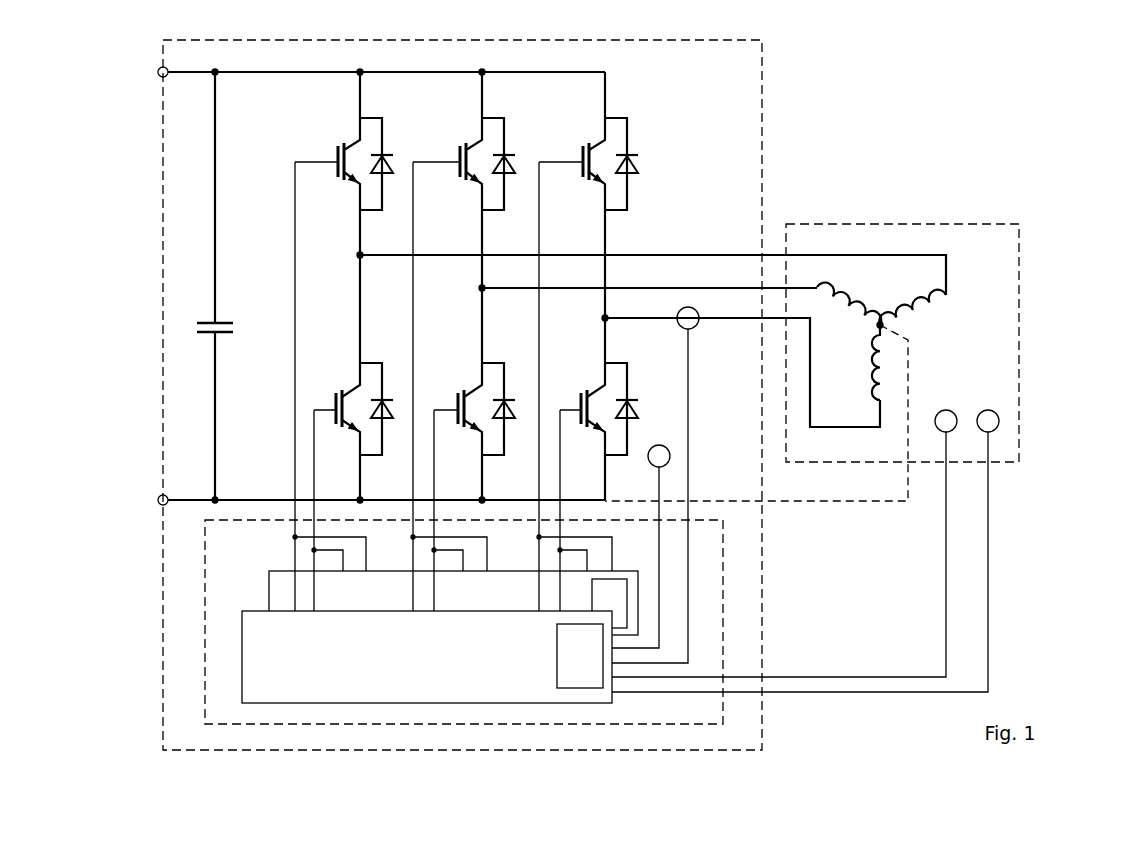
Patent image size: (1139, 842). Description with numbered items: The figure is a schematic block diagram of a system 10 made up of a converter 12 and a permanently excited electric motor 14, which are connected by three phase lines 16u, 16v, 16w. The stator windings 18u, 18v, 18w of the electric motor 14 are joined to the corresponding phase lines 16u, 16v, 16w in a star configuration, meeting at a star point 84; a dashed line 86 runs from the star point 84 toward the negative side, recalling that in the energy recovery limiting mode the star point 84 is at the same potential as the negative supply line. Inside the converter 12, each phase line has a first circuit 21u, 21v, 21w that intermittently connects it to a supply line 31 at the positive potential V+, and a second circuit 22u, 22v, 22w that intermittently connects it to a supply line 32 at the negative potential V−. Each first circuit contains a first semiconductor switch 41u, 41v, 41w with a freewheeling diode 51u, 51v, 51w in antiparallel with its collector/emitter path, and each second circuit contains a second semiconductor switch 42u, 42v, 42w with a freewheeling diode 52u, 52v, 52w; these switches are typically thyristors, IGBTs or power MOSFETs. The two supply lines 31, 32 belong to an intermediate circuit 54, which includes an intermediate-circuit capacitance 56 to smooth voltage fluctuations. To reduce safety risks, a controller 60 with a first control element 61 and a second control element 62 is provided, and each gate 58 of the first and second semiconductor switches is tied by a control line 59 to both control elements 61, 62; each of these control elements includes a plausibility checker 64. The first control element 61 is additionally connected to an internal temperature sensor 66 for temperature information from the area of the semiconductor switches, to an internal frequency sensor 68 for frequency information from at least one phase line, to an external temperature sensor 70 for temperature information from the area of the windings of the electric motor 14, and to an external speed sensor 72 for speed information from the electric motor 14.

The system 10 is at (937, 146).
The converter 12 is at (762, 93).
The electric motor 14 is at (1019, 322).
The phase line 16u is at (381, 258).
The phase line 16v is at (506, 292).
The phase line 16w is at (747, 324).
The winding 18u is at (911, 301).
The winding 18v is at (851, 295).
The winding 18w is at (863, 362).
The first circuit 21u is at (340, 137).
The first circuit 21v is at (462, 128).
The first circuit 21w is at (584, 128).
The second circuit 22u is at (343, 320).
The second circuit 22v is at (465, 320).
The second circuit 22w is at (598, 348).
The supply line 31 is at (186, 80).
The supply line 32 is at (186, 492).
The first semiconductor switch 41u is at (337, 190).
The first semiconductor switch 41v is at (459, 190).
The first semiconductor switch 41w is at (582, 190).
The second semiconductor switch 42u is at (340, 386).
The second semiconductor switch 42v is at (462, 386).
The second semiconductor switch 42w is at (580, 384).
The freewheeling diode 51u is at (392, 165).
The freewheeling diode 51v is at (514, 163).
The freewheeling diode 51w is at (640, 167).
The freewheeling diode 52u is at (403, 410).
The freewheeling diode 52v is at (523, 410).
The freewheeling diode 52w is at (641, 410).
The intermediate circuit 54 is at (238, 286).
The intermediate-circuit capacitance 56 is at (230, 322).
The gate 58 is at (333, 149).
The control line 59 is at (294, 438).
The controller 60 is at (222, 558).
The first control element 61 is at (259, 683).
The second control element 62 is at (369, 600).
The plausibility checker 64 is at (434, 641).
The internal temperature sensor 66 is at (661, 444).
The internal frequency sensor 68 is at (697, 327).
The external temperature sensor 70 is at (946, 410).
The external speed sensor 72 is at (988, 410).
The star point 84 is at (876, 327).
The dashed line 86 is at (836, 503).